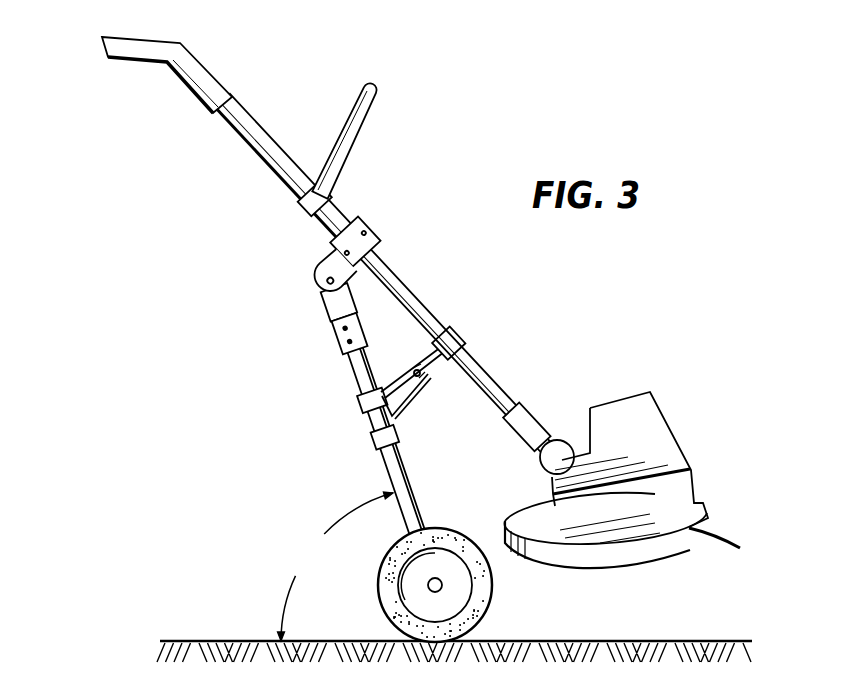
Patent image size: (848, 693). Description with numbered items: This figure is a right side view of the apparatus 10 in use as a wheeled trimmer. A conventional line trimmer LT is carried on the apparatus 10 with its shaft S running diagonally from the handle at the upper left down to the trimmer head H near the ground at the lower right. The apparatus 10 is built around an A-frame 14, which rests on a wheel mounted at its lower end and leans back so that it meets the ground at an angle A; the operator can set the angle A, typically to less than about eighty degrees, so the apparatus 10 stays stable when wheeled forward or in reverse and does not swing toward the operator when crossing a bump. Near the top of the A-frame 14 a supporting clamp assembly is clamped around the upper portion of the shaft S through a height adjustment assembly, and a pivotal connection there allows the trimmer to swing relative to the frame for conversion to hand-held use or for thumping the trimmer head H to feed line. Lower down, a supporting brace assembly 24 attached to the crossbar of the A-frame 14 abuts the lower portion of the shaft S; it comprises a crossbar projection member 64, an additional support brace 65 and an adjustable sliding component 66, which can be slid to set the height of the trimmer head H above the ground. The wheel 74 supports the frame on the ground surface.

The apparatus 10 is at (436, 57).
The line trimmer LT is at (95, 34).
The shaft S is at (374, 287).
The trimmer head H is at (669, 440).
The A-frame 14 is at (361, 470).
The supporting brace assembly 24 is at (441, 400).
The crossbar projection member 64 is at (397, 392).
The additional support brace 65 is at (402, 422).
The adjustable sliding component 66 is at (449, 360).
The wheel 74 is at (403, 604).
The angle A is at (336, 566).